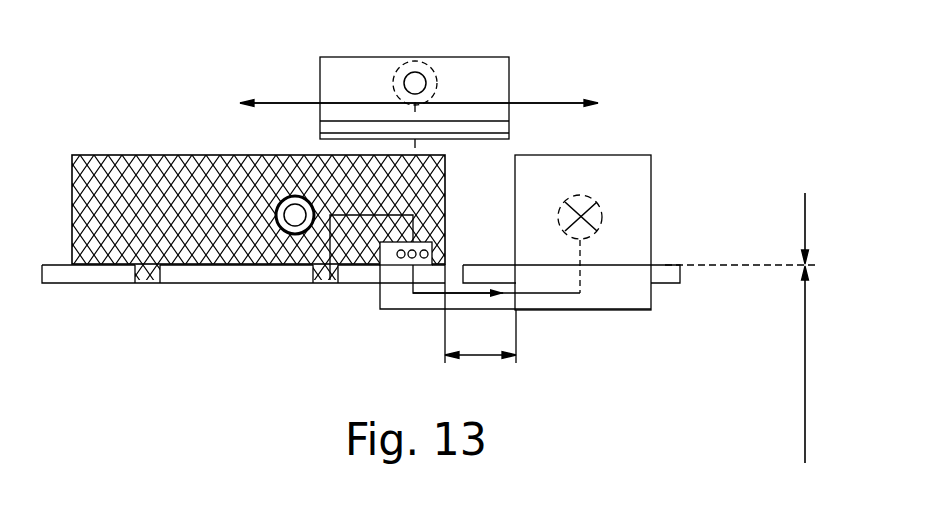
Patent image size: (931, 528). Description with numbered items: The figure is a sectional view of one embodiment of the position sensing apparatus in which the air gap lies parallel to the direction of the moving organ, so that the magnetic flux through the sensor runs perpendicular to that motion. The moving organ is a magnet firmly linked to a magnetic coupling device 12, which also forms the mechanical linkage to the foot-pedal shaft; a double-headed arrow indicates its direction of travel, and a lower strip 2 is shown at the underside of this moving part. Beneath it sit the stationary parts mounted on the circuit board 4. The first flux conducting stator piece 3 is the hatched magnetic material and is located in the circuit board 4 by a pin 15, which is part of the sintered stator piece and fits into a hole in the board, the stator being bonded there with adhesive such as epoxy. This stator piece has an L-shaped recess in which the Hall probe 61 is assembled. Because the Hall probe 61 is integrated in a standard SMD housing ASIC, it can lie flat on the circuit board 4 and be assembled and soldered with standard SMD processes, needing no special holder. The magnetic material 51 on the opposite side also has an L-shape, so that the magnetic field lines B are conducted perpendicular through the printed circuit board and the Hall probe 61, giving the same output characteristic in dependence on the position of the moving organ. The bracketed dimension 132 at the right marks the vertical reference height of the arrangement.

The magnetic coupling device 12 is at (497, 65).
The flux conducting stator piece 3 is at (107, 155).
The lower strip of head 2 is at (332, 133).
The magnetic material 51 is at (628, 189).
The pin 15 is at (148, 283).
The Hall probe 61 is at (401, 262).
The magnetic field lines B is at (331, 284).
The circuit board 4 is at (665, 272).
The height dimension 132 is at (748, 346).